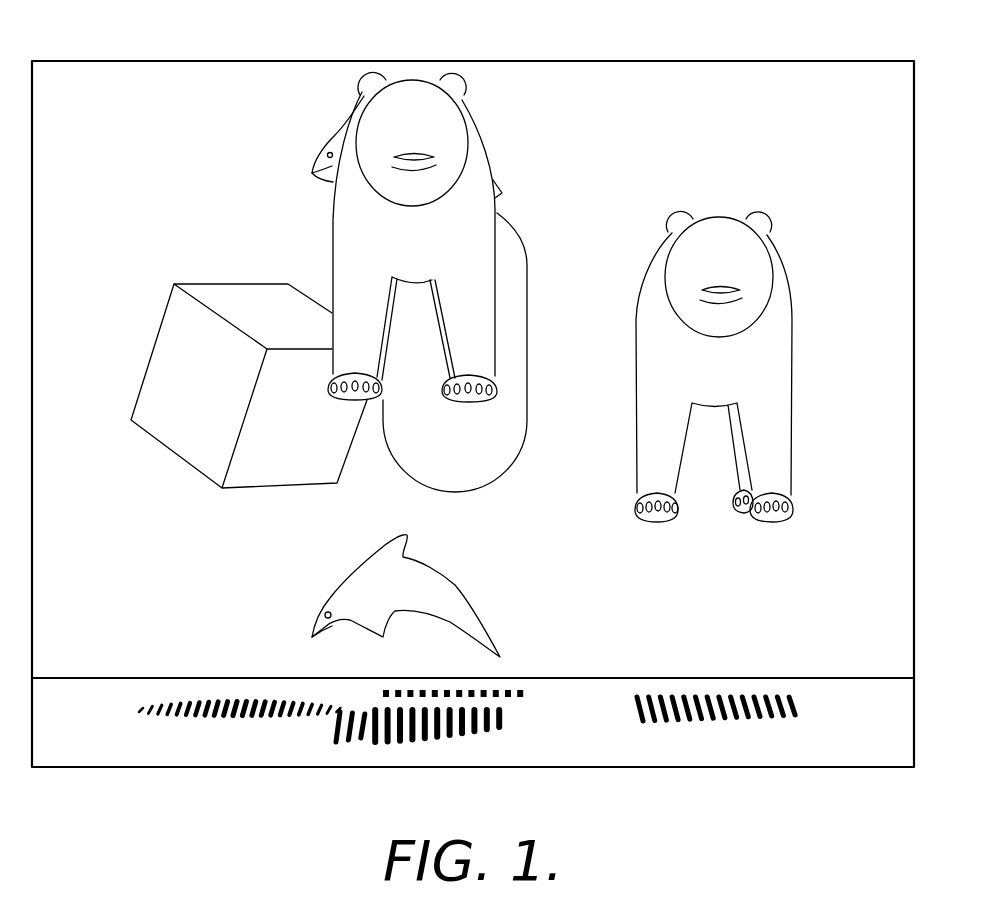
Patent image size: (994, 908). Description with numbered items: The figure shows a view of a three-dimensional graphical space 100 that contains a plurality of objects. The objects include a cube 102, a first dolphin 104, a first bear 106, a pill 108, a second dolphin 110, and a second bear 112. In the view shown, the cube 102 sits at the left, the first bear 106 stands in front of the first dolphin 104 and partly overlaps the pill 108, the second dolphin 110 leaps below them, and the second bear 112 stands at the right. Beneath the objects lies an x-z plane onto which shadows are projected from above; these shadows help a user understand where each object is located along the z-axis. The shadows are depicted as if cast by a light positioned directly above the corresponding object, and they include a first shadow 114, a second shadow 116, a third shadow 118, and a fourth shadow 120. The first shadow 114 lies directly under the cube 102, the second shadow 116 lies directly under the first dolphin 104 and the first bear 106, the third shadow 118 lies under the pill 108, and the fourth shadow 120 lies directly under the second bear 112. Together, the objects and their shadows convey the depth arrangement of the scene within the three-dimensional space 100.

The 3-D space 100 is at (653, 64).
The cube 102 is at (167, 430).
The first dolphin 104 is at (317, 143).
The first bear 106 is at (342, 178).
The pill 108 is at (418, 450).
The second dolphin 110 is at (317, 602).
The second bear 112 is at (648, 442).
The first shadow 114 is at (153, 710).
The second shadow 116 is at (343, 727).
The third shadow 118 is at (522, 695).
The fourth shadow 120 is at (653, 715).